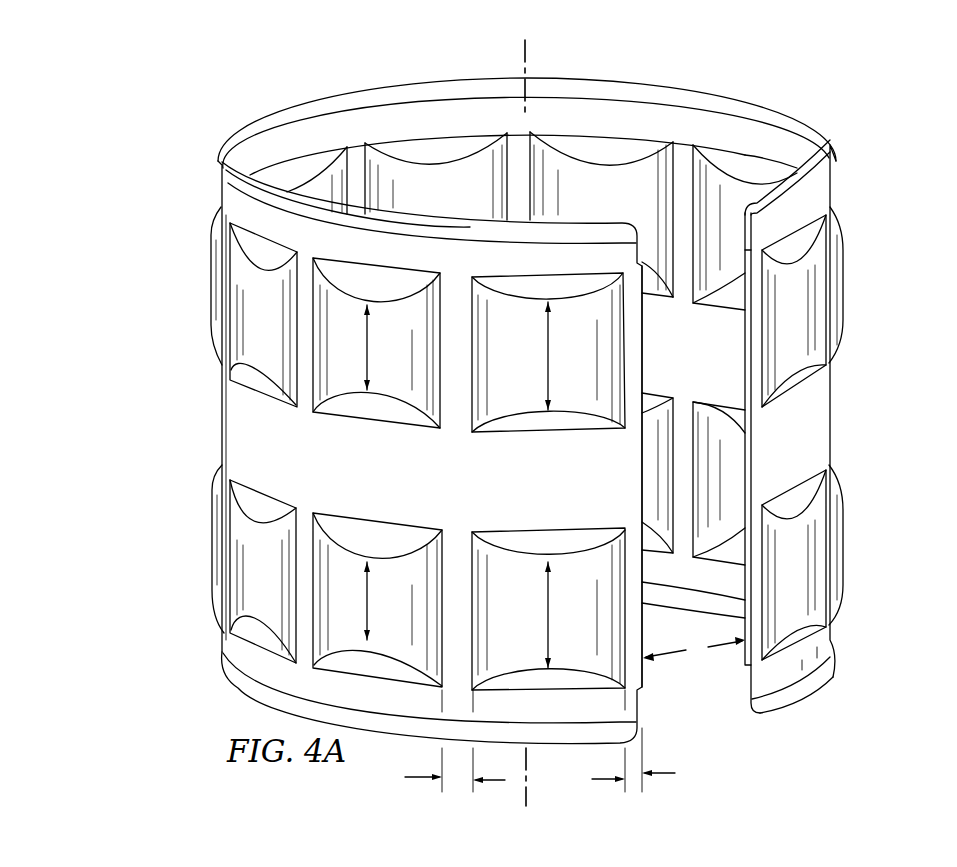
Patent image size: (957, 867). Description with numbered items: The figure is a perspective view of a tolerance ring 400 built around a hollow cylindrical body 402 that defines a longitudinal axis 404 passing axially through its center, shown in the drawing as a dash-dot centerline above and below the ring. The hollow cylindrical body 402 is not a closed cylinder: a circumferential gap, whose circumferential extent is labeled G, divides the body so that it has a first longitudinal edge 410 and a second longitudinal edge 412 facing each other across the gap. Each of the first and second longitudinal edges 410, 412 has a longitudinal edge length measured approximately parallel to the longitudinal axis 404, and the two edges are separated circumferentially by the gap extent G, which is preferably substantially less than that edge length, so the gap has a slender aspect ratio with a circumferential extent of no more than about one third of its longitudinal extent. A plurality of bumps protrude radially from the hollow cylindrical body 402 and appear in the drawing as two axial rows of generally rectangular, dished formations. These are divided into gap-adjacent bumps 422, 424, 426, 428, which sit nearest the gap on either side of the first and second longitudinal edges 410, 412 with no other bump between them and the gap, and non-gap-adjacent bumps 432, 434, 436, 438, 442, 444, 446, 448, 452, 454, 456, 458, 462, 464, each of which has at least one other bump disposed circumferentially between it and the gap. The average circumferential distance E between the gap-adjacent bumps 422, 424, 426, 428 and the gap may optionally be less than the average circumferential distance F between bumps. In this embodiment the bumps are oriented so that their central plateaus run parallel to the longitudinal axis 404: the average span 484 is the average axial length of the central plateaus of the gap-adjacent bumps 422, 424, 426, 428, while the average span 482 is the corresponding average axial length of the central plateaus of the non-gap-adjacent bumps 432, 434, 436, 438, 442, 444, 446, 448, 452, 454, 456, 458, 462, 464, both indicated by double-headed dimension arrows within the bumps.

The tolerance ring 400 is at (230, 98).
The hollow cylindrical body 402 is at (830, 408).
The longitudinal axis 404 is at (523, 53).
The first longitudinal edge 410 is at (643, 327).
The second longitudinal edge 412 is at (745, 358).
The gap-adjacent bump 422 is at (513, 397).
The gap-adjacent bump 424 is at (585, 568).
The gap-adjacent bump 426 is at (808, 310).
The gap-adjacent bump 428 is at (810, 572).
The non-gap-adjacent bump 432 is at (340, 380).
The non-gap-adjacent bump 434 is at (407, 573).
The non-gap-adjacent bump 436 is at (258, 353).
The non-gap-adjacent bump 438 is at (250, 543).
The non-gap-adjacent bump 442 is at (843, 260).
The non-gap-adjacent bump 444 is at (843, 522).
The non-gap-adjacent bump 446 is at (738, 194).
The non-gap-adjacent bump 448 is at (733, 458).
The non-gap-adjacent bump 452 is at (602, 187).
The non-gap-adjacent bump 454 is at (428, 186).
The non-gap-adjacent bump 456 is at (655, 465).
The non-gap-adjacent bump 458 is at (318, 182).
The non-gap-adjacent bump 462 is at (215, 277).
The non-gap-adjacent bump 464 is at (213, 530).
The average span of the central plateaus of the non-gap-adjacent bumps 482 is at (368, 350).
The average span of the central plateaus of the gap-adjacent bumps 484 is at (549, 360).